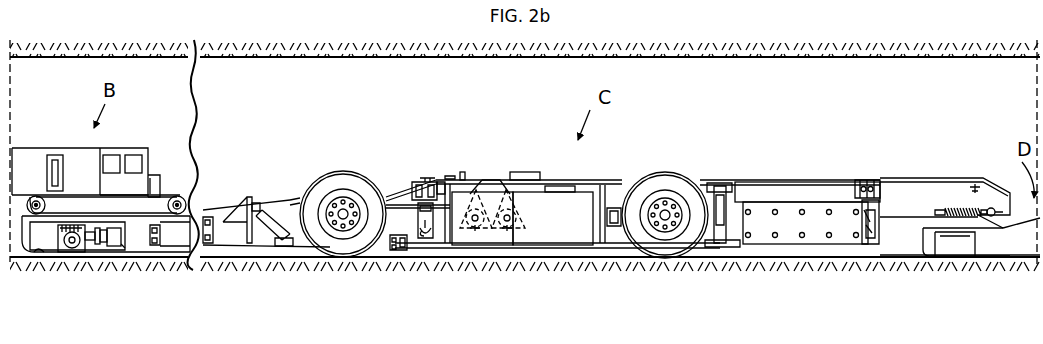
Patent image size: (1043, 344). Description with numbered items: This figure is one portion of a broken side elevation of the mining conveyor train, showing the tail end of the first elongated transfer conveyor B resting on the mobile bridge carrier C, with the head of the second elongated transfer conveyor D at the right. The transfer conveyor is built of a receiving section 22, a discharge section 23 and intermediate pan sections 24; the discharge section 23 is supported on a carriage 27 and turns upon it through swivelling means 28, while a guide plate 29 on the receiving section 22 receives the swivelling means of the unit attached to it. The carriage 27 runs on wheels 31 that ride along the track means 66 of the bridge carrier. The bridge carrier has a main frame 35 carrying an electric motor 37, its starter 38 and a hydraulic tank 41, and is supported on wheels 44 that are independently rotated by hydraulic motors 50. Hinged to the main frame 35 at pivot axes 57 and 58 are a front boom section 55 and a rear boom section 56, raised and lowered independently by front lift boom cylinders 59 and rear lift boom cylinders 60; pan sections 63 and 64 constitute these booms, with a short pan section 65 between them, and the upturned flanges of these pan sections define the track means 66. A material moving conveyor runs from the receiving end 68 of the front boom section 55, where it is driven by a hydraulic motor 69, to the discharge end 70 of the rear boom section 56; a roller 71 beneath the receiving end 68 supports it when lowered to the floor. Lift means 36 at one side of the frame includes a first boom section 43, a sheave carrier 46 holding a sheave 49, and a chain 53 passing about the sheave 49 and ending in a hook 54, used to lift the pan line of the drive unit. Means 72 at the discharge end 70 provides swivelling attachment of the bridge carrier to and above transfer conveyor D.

The receiving section 22 is at (1011, 250).
The discharge section 23 is at (146, 158).
The intermediate pan sections 24 is at (24, 156).
The carriage 27 is at (148, 203).
The swivelling means 28 is at (156, 176).
The guide plate 29 is at (978, 228).
The wheels 31 is at (33, 199).
The main frame 35 is at (426, 240).
The lift means 36 is at (440, 156).
The electric motor 37 is at (532, 175).
The starter 38 is at (819, 212).
The hydraulic tank 41 is at (550, 230).
The first boom section 43 is at (878, 236).
The wheels 44 is at (346, 246).
The sheave carrier 46 is at (438, 188).
The sheave 49 is at (431, 184).
The hydraulic motors 50 is at (398, 243).
The chain 53 is at (425, 190).
The hook 54 is at (862, 234).
The front boom section 55 is at (226, 218).
The rear boom section 56 is at (884, 181).
The pivot axis 57 is at (475, 230).
The pivot axis 58 is at (507, 230).
The front lift boom cylinders 59 is at (293, 198).
The rear lift boom cylinders 60 is at (722, 222).
The pan section 63 is at (392, 196).
The pan section 64 is at (808, 191).
The short pan section 65 is at (485, 182).
The track means 66 is at (298, 200).
The receiving end 68 is at (22, 242).
The hydraulic motor 69 is at (113, 246).
The discharge end 70 is at (1009, 200).
The roller 71 is at (42, 258).
The swivelling attachment means 72 is at (1003, 212).